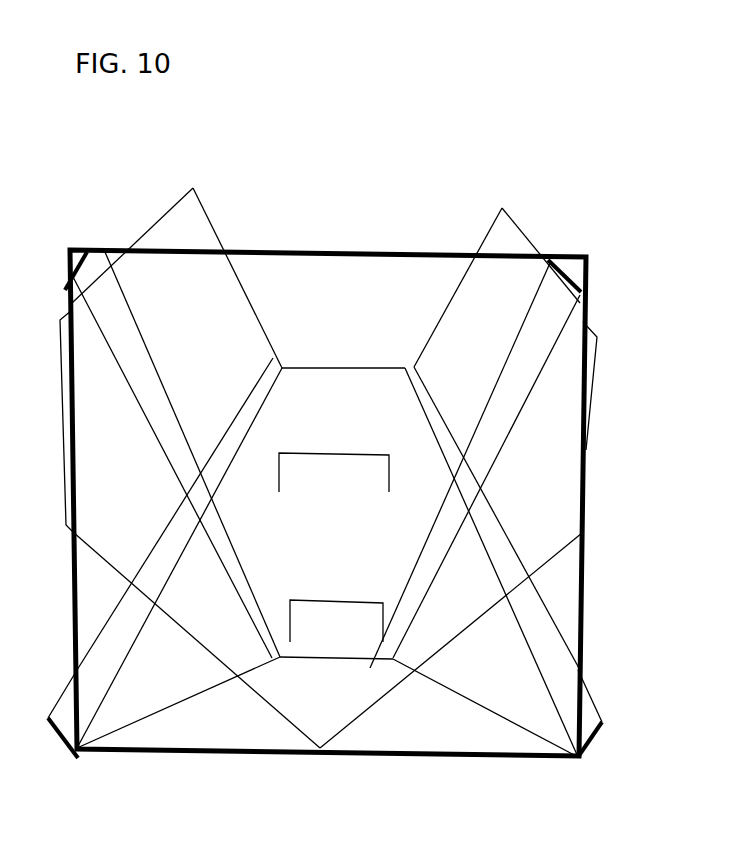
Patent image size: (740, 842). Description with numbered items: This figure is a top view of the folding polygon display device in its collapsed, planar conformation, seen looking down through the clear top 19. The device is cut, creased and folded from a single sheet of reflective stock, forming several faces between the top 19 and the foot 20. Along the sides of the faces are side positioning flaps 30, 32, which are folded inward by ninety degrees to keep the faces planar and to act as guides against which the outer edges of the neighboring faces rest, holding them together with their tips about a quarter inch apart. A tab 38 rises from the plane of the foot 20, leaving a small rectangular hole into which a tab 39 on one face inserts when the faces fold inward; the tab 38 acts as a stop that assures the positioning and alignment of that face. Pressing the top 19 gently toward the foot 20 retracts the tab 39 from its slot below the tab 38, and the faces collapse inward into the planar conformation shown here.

The top 19 is at (353, 253).
The foot 20 is at (177, 278).
The side positioning flap 30 is at (475, 438).
The side positioning flap 32 is at (176, 455).
The tab 38 is at (334, 472).
The tab 39 is at (336, 621).